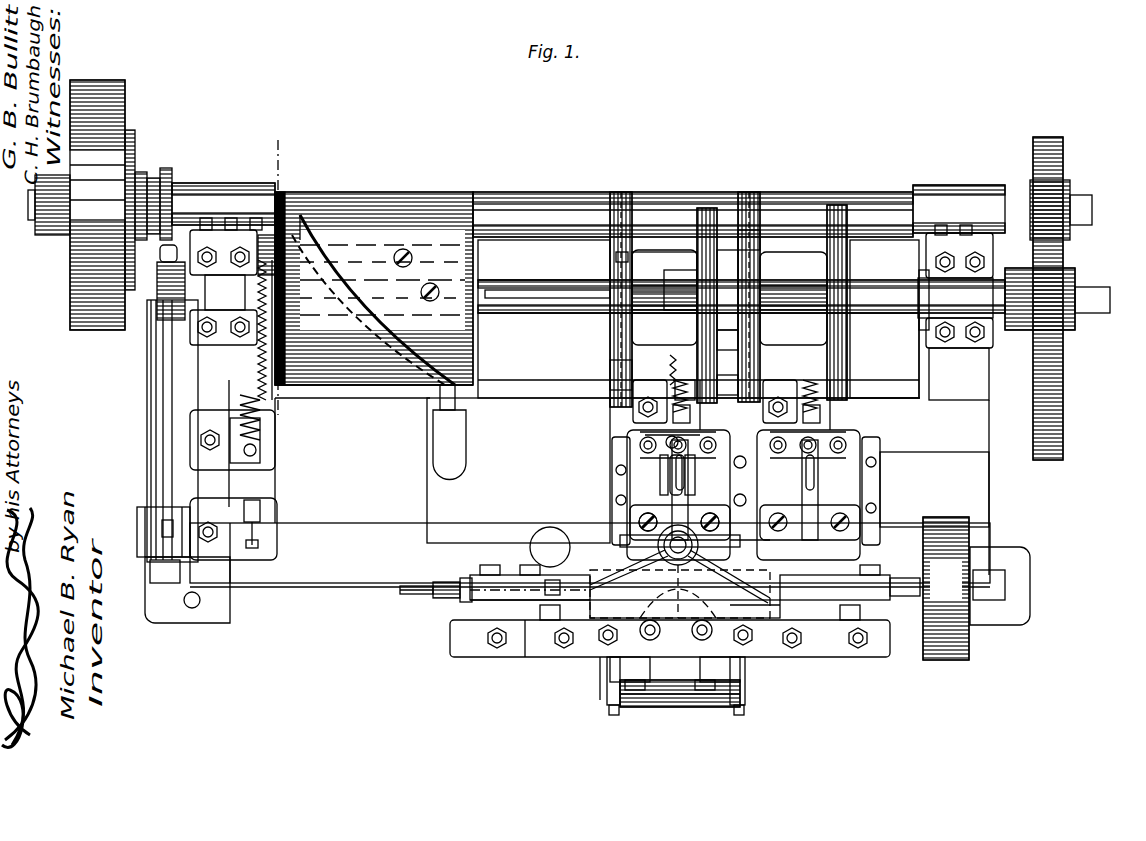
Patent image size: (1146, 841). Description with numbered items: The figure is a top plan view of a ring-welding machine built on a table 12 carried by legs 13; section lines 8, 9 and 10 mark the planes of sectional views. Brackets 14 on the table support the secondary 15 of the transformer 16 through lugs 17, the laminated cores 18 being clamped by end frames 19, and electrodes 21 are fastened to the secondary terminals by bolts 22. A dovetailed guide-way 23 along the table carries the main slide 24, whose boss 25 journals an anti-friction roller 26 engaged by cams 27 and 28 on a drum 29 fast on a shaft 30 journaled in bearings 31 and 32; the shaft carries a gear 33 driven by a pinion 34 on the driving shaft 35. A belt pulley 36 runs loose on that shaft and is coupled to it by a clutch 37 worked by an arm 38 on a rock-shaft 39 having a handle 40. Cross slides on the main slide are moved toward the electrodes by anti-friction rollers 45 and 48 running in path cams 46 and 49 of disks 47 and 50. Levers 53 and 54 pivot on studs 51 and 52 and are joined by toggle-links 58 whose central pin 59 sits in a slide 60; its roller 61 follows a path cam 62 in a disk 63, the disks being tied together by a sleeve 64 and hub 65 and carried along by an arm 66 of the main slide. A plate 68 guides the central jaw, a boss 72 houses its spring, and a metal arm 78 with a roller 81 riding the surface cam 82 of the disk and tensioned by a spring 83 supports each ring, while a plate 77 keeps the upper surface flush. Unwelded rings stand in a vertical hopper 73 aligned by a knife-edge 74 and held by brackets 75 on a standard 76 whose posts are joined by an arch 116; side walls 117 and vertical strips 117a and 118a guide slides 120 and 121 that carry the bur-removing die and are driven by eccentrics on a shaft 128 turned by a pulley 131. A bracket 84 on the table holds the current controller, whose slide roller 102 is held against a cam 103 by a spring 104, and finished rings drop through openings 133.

The section line 8 is at (252, 590).
The section line 9 is at (579, 591).
The section line 10 is at (553, 672).
The table 12 is at (590, 555).
The legs 13 is at (1005, 585).
The brackets 14 is at (470, 648).
The secondary 15 is at (645, 683).
The transformer 16 is at (640, 705).
The lugs 17 is at (598, 655).
The laminated cores 18 is at (675, 700).
The end frames 19 is at (612, 690).
The electrodes 21 is at (650, 640).
The bolts 22 is at (612, 712).
The dovetailed guide-way 23 is at (609, 477).
The main slide 24 is at (518, 470).
The boss 25 is at (458, 447).
The anti-friction roller 26 is at (457, 402).
The cam 27 is at (420, 250).
The cam 28 is at (325, 260).
The drum 29 is at (395, 385).
The shaft 30 is at (497, 290).
The bearing 31 is at (222, 300).
The bearing 32 is at (957, 292).
The gear 33 is at (1065, 265).
The pinion 34 is at (1068, 187).
The driving shaft 35 is at (540, 207).
The belt pulley 36 is at (118, 82).
The clutch 37 is at (150, 172).
The arm 38 is at (162, 270).
The rock-shaft 39 is at (162, 392).
The handle 40 is at (192, 610).
The anti-friction roller 45 is at (618, 375).
The path cam 46 is at (618, 258).
The disk 47 is at (620, 232).
The anti-friction roller 48 is at (795, 345).
The path cam 49 is at (752, 240).
The disk 50 is at (748, 222).
The stud 51 is at (700, 521).
The stud 52 is at (692, 536).
The lever 53 is at (628, 452).
The lever 54 is at (750, 523).
The toggle-links 58 is at (655, 437).
The central pin 59 is at (668, 440).
The slide 60 is at (700, 378).
The anti-friction roller 61 is at (726, 350).
The path cam 62 is at (723, 250).
The disk 63 is at (705, 215).
The sleeve 64 is at (645, 292).
The hub 65 is at (672, 300).
The arm 66 is at (640, 332).
The plate 68 is at (660, 492).
The boss 72 is at (670, 468).
The vertical hopper 73 is at (705, 512).
The knife-edge 74 is at (660, 540).
The brackets 75 is at (640, 565).
The standard 76 is at (524, 657).
The plate 77 is at (762, 525).
The metal arm 78 is at (700, 482).
The anti-friction roller 81 is at (743, 467).
The surface cam 82 is at (722, 385).
The spring 83 is at (682, 392).
The bracket 84 is at (205, 483).
The anti-friction roller 102 is at (270, 370).
The cam 103 is at (268, 250).
The spring 104 is at (258, 440).
The arch 116 is at (735, 612).
The side walls 117 is at (478, 597).
The vertical strip 117a is at (480, 577).
The vertical strip 118a is at (600, 680).
The slide 120 is at (548, 616).
The slide 121 is at (500, 602).
The shaft 128 is at (433, 596).
The pulley 131 is at (958, 648).
The openings 133 is at (551, 530).